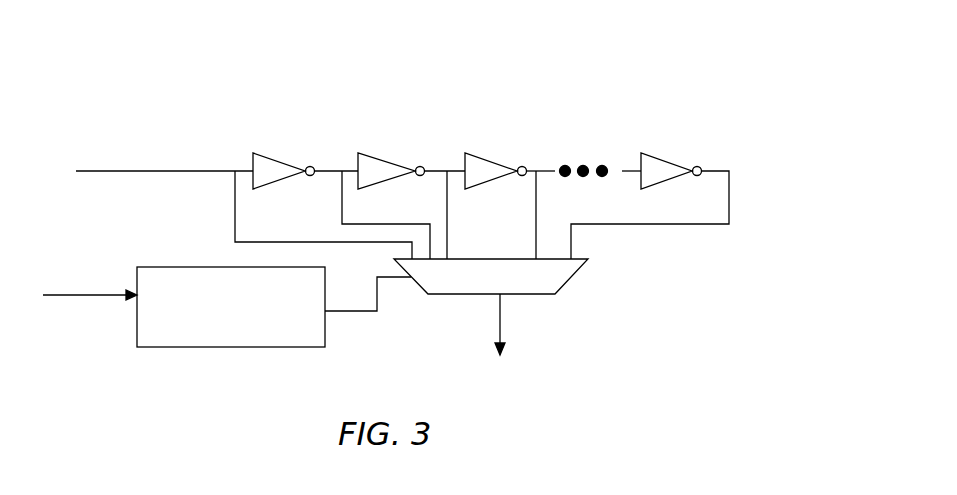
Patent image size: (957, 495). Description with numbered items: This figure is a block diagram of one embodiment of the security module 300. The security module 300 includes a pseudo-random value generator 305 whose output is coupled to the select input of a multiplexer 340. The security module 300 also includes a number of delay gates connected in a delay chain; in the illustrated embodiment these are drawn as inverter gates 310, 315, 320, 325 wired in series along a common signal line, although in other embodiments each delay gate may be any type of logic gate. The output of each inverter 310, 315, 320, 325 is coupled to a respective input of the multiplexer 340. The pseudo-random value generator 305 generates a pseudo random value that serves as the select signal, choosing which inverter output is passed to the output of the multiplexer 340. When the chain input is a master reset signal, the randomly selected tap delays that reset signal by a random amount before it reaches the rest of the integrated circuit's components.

The security module 300 is at (402, 130).
The pseudo-random value (PRV) generator 305 is at (293, 320).
The inverter gate 310 is at (253, 153).
The inverter gate 315 is at (358, 153).
The inverter gate 320 is at (465, 153).
The inverter gate 325 is at (641, 153).
The multiplexer 340 is at (528, 288).